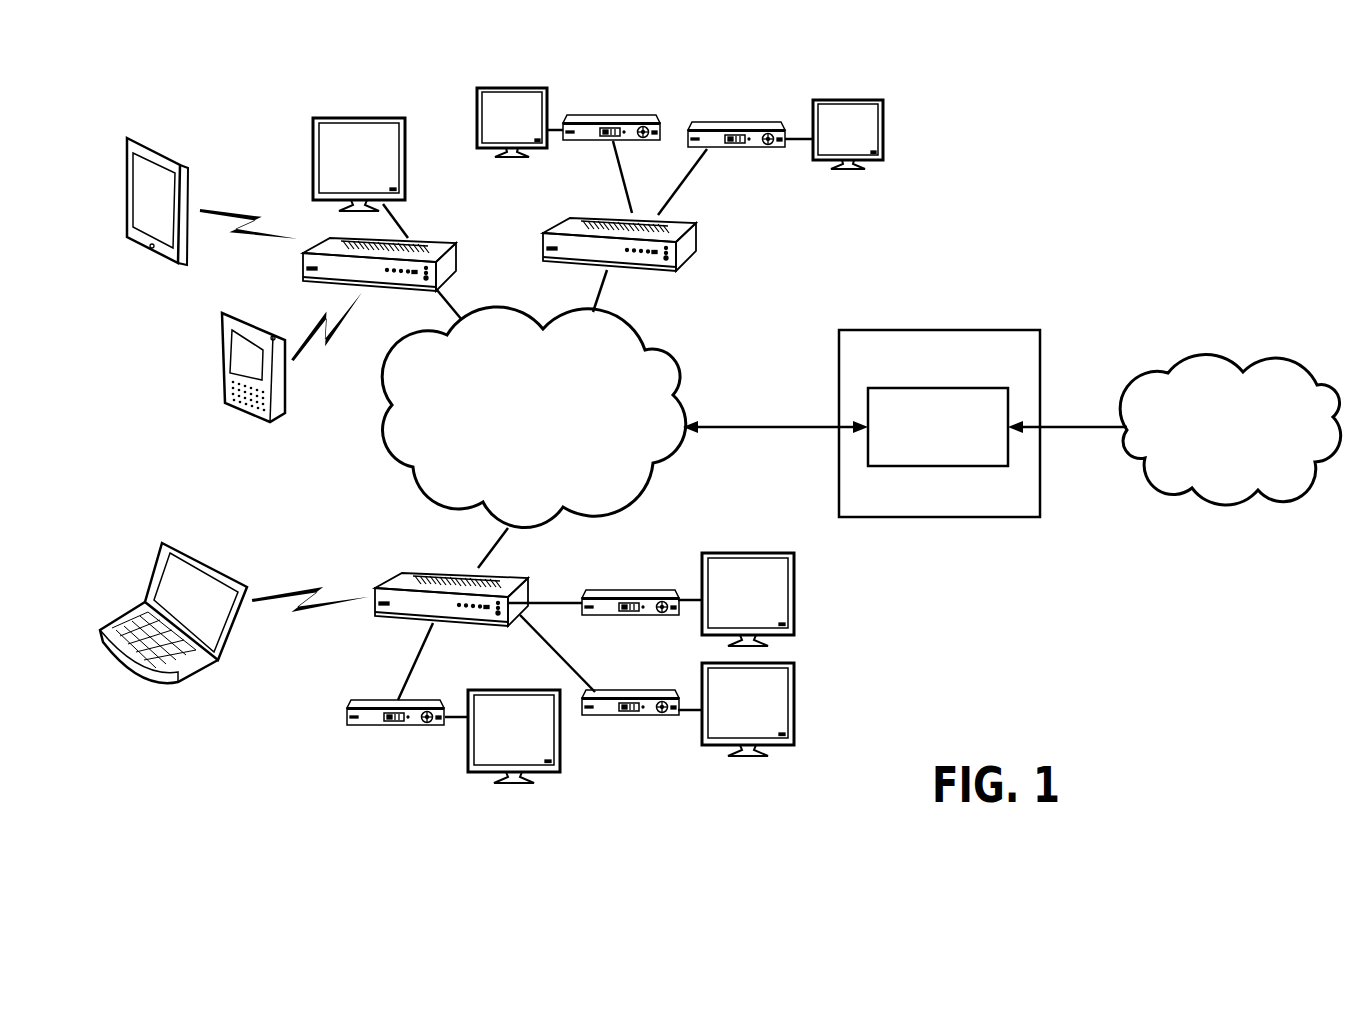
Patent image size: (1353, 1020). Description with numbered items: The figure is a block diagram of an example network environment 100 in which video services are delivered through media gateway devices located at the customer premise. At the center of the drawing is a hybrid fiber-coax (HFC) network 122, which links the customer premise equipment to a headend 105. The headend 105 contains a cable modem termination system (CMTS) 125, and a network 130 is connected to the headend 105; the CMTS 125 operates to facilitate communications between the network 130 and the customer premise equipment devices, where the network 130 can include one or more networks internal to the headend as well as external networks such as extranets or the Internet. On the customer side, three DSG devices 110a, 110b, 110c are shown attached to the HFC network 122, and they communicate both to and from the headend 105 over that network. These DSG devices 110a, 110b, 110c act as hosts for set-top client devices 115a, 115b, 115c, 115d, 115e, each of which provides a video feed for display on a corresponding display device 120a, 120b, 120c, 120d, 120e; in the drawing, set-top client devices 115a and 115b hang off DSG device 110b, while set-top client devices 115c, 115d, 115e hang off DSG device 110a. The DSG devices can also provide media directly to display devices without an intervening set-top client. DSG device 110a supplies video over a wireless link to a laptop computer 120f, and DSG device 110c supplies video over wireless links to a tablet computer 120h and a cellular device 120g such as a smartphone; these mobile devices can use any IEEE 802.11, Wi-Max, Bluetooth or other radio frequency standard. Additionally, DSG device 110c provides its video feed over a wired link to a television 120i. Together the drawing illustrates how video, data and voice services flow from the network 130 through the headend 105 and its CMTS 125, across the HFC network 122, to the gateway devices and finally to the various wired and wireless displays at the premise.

The network environment 100 is at (1114, 656).
The headend 105 is at (1028, 509).
The DSG device 110a is at (527, 578).
The DSG device 110b is at (670, 275).
The DSG device 110c is at (435, 237).
The set-top client device 115a is at (712, 122).
The set-top client device 115b is at (628, 115).
The set-top client device 115c is at (410, 700).
The set-top client device 115d is at (605, 717).
The set-top client device 115e is at (605, 590).
The display device 120a is at (866, 100).
The display device 120b is at (518, 88).
The display device 120c is at (735, 553).
The display device 120d is at (782, 663).
The display device 120e is at (548, 770).
The laptop computer 120f is at (218, 662).
The cellular device 120g is at (272, 422).
The tablet computer 120h is at (170, 265).
The television 120i is at (357, 118).
The hybrid fiber-coax (HFC) network 122 is at (463, 510).
The cable modem termination system (CMTS) 125 is at (935, 468).
The network 130 is at (1165, 492).